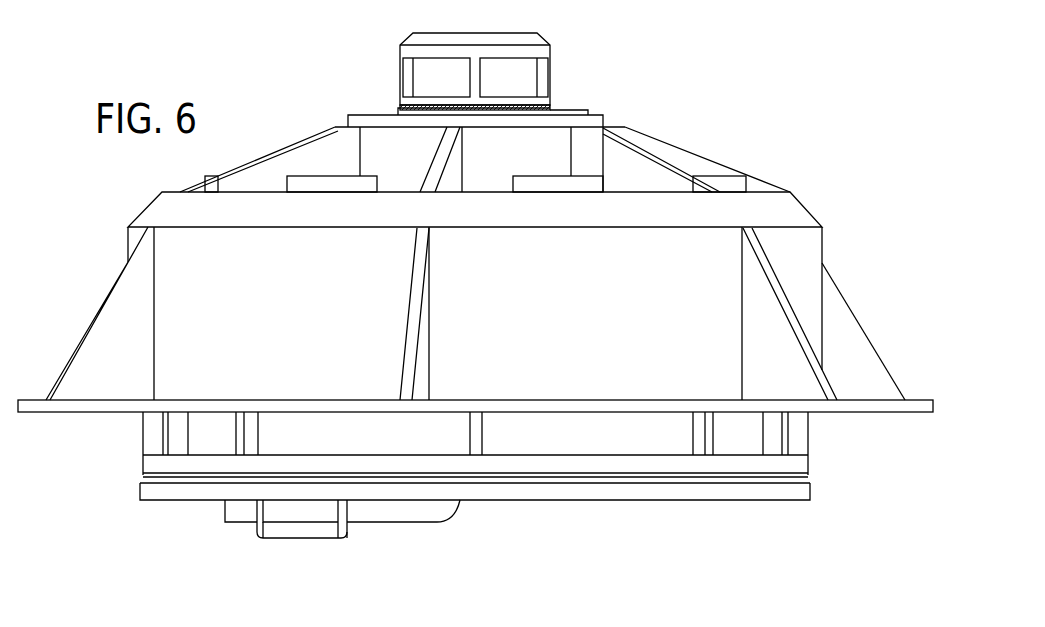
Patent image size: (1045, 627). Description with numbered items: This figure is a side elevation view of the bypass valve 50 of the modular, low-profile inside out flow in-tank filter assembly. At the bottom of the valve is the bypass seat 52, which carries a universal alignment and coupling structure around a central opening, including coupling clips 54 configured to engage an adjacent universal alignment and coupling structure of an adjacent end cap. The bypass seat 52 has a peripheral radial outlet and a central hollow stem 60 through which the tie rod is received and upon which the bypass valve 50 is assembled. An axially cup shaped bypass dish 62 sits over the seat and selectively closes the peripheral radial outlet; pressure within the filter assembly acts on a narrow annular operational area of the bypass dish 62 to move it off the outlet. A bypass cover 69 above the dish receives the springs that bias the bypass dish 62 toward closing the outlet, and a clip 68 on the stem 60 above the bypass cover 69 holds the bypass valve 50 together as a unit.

The bypass valve 50 is at (742, 123).
The bypass seat 52 is at (728, 492).
The coupling clips 54 is at (440, 508).
The central hollow stem 60 is at (550, 60).
The bypass dish 62 is at (803, 432).
The clip 68 is at (590, 112).
The bypass cover 69 is at (825, 243).